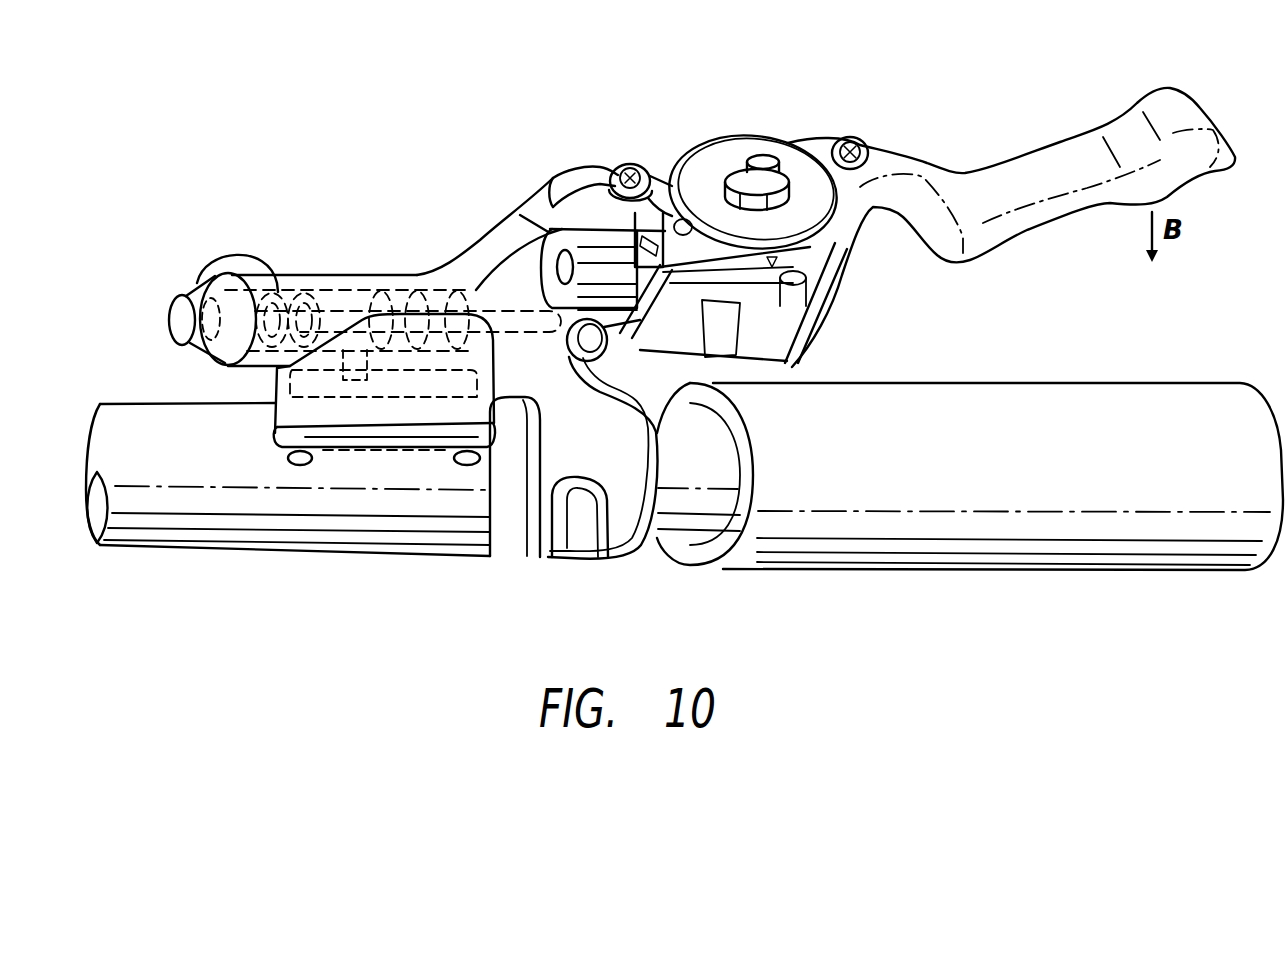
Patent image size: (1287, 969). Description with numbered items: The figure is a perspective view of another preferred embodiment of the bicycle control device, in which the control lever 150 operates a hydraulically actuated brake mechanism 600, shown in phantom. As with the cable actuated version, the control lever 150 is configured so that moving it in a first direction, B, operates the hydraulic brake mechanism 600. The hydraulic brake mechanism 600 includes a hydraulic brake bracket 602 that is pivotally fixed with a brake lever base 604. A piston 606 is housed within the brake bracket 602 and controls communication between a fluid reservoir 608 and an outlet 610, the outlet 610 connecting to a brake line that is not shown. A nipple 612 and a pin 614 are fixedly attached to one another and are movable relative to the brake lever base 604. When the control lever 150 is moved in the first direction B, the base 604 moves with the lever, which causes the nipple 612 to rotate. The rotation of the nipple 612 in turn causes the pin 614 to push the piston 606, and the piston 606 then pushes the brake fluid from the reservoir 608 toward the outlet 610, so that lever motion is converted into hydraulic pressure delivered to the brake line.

The control lever 150 is at (1193, 118).
The hydraulic brake mechanism 600 is at (164, 279).
The hydraulic brake bracket 602 is at (422, 284).
The brake lever base 604 is at (613, 347).
The piston 606 is at (343, 313).
The fluid reservoir 608 is at (373, 417).
The outlet 610 is at (230, 277).
The nipple 612 is at (545, 293).
The pin 614 is at (493, 303).